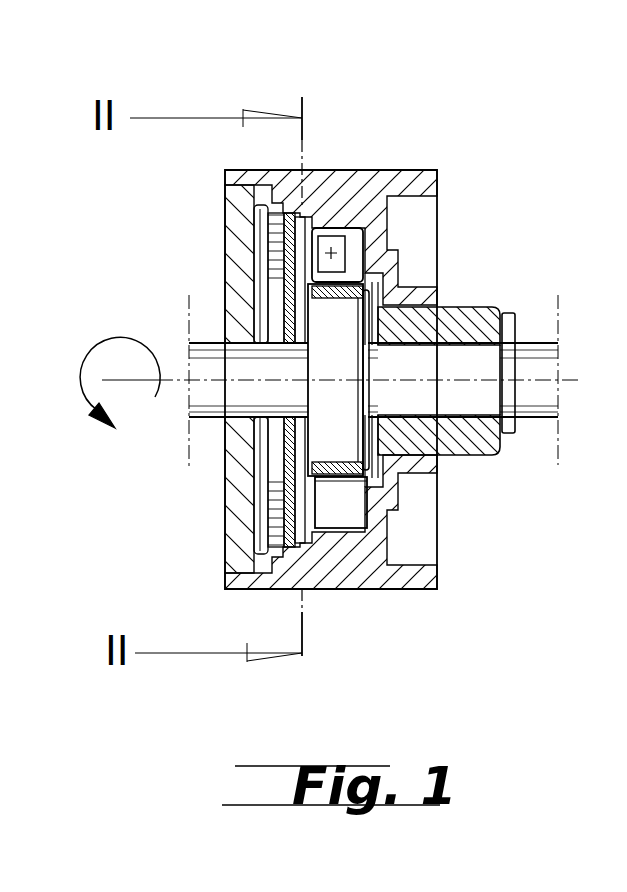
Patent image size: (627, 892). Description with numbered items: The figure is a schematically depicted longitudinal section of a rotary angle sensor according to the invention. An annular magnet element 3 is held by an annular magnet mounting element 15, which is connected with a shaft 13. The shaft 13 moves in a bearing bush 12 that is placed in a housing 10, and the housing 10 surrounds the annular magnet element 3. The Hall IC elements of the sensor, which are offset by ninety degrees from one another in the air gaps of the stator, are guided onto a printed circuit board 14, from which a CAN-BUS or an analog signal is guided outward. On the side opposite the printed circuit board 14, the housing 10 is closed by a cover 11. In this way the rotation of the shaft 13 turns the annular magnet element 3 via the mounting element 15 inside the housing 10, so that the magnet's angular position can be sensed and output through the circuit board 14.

The annular magnet element 3 is at (343, 483).
The housing 10 is at (381, 190).
The cover 11 is at (243, 490).
The bearing bush 12 is at (444, 338).
The shaft 13 is at (530, 345).
The printed circuit board 14 is at (290, 300).
The annular magnet mounting element 15 is at (330, 441).